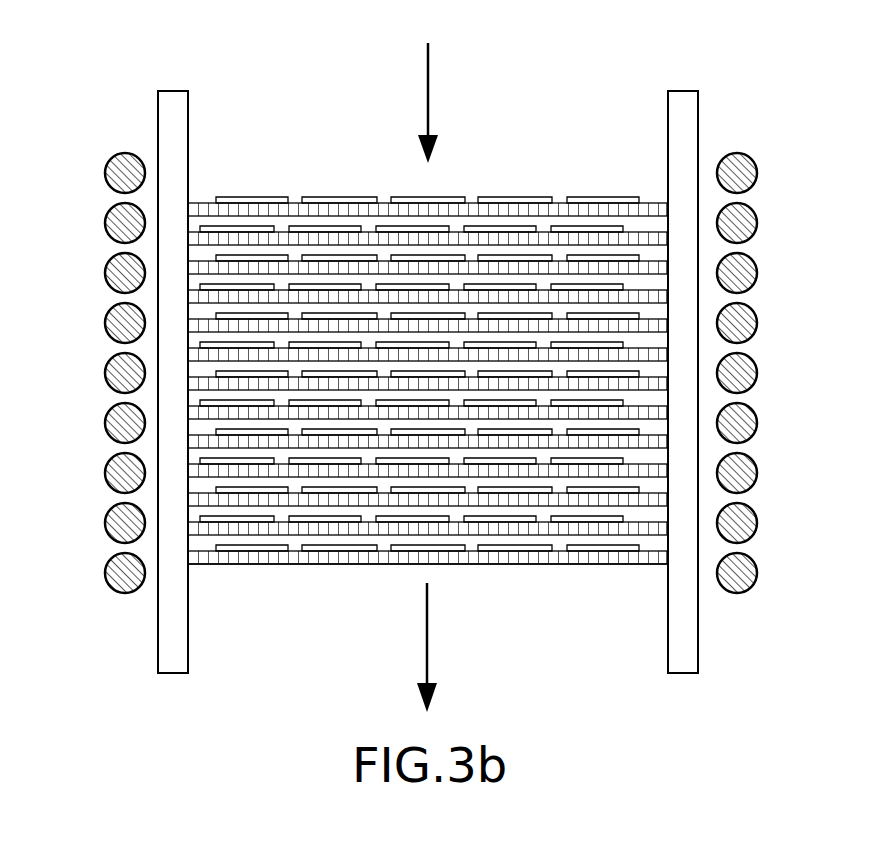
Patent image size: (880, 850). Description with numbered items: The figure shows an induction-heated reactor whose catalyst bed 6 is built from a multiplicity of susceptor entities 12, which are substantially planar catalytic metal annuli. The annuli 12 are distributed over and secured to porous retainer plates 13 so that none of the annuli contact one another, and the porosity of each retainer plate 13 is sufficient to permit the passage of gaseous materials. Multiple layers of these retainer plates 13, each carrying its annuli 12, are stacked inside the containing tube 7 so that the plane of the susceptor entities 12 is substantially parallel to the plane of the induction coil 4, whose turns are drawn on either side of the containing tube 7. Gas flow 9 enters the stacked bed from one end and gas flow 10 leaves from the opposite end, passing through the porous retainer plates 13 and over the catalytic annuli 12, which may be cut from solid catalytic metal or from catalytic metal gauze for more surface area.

The induction coil 4 is at (106, 310).
The catalyst bed 6 is at (318, 587).
The containing tube 7 is at (700, 648).
The gas flow 9 is at (426, 96).
The gas flow 10 is at (425, 670).
The susceptor entities 12 is at (340, 197).
The porous retainer plates 13 is at (657, 203).